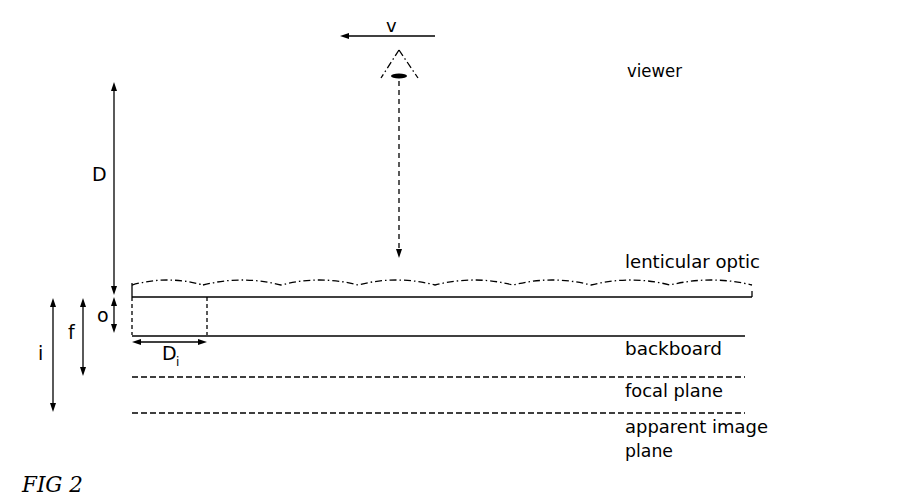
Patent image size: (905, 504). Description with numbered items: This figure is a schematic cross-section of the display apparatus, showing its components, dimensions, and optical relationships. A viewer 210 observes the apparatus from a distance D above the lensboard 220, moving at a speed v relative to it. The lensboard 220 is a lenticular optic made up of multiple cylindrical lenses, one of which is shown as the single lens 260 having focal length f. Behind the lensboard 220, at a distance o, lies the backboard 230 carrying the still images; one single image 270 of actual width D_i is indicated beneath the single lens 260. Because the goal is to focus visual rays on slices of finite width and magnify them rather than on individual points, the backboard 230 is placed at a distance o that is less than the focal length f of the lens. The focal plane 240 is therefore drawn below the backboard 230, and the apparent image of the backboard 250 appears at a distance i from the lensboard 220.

The viewer 210 is at (425, 154).
The lensboard 220 is at (442, 274).
The backboard 230 is at (438, 324).
The focal plane 240 is at (438, 366).
The apparent image of backboard 250 is at (438, 401).
The single lens 260 is at (167, 268).
The single image 270 is at (185, 329).